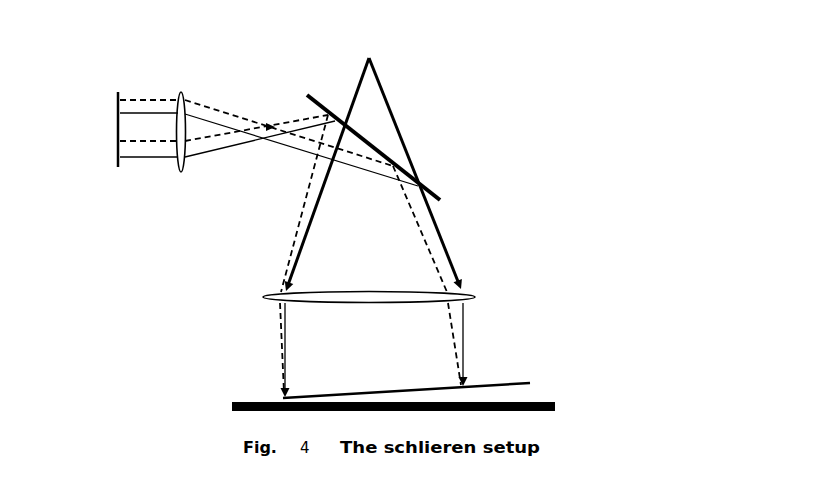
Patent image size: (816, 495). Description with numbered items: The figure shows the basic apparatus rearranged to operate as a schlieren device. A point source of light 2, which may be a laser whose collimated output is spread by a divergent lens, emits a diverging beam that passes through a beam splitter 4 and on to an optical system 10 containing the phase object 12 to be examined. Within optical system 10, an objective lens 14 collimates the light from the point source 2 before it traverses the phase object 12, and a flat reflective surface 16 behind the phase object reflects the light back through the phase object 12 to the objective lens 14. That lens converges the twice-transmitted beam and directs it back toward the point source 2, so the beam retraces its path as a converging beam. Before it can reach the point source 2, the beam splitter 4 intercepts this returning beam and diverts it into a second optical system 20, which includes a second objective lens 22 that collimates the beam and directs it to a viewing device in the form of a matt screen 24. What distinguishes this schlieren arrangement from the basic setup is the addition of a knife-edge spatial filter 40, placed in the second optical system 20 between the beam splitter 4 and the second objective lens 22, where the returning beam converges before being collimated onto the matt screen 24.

The point source of light 2 is at (370, 57).
The beam splitter 4 is at (427, 188).
The optical system 10 is at (198, 337).
The phase object 12 is at (510, 368).
The objective lens 14 is at (468, 297).
The flat reflective surface 16 is at (243, 401).
The second optical system 20 is at (142, 213).
The second objective lens 22 is at (217, 159).
The matt screen 24 is at (117, 146).
The knife-edge spatial filter 40 is at (272, 125).